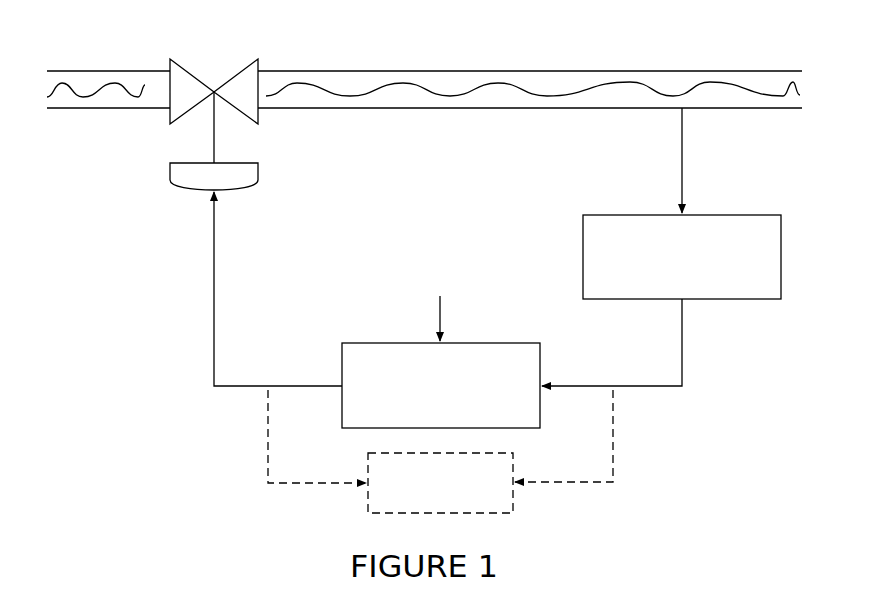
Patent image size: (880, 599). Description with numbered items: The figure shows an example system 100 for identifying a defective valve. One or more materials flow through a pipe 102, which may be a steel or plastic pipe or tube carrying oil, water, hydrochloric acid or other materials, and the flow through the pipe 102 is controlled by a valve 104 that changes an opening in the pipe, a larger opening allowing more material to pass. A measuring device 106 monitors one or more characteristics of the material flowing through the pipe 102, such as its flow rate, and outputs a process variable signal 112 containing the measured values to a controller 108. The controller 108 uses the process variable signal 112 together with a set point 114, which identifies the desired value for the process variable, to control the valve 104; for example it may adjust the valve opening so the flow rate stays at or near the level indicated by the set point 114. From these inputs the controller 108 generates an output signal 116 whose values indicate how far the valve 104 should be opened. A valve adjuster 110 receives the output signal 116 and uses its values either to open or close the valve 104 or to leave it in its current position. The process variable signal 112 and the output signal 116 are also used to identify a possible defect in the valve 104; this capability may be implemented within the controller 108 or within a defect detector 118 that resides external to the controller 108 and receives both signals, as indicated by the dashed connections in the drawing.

The system 100 is at (120, 331).
The pipe 102 is at (634, 71).
The valve 104 is at (247, 64).
The measuring device 106 is at (583, 258).
The controller 108 is at (342, 350).
The valve adjuster 110 is at (241, 191).
The process variable signal 112 is at (623, 357).
The set point 114 is at (432, 267).
The output signal 116 is at (287, 357).
The defect detector 118 is at (510, 513).